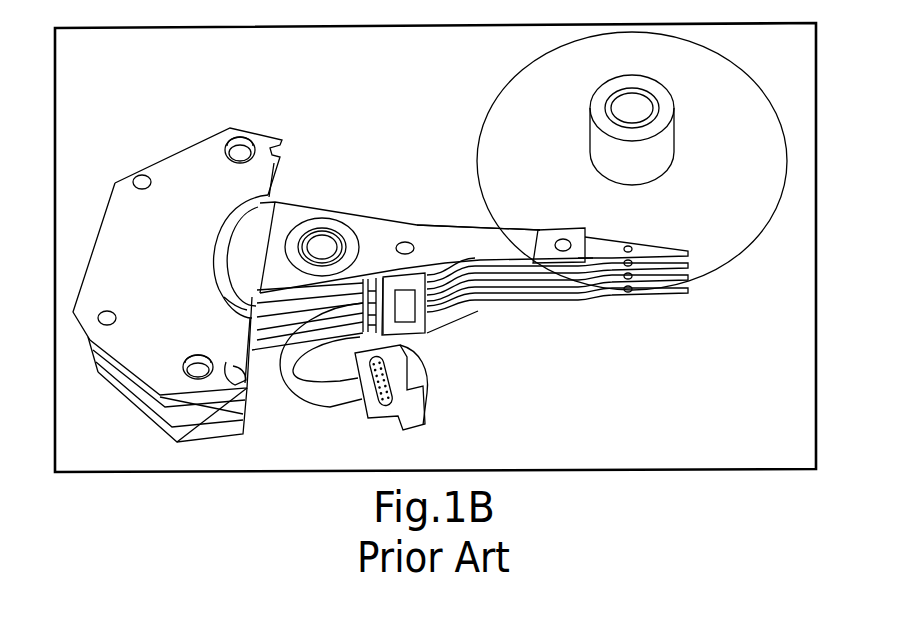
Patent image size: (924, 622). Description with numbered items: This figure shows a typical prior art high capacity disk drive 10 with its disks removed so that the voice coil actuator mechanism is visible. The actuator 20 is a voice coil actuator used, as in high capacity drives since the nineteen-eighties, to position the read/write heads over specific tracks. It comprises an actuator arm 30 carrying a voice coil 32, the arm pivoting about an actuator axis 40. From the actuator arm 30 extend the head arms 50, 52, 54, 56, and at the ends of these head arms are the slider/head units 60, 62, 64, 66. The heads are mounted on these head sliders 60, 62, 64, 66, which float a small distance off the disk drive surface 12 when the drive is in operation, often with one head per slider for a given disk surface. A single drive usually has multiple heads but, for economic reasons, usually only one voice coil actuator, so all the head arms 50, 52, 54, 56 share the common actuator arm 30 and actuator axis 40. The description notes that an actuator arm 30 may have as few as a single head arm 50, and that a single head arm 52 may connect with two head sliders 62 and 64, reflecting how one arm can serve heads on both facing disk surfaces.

The high capacity disk drive 10 is at (327, 77).
The disk drive surface 12 is at (712, 68).
The actuator 20 is at (188, 167).
The actuator arm 30 is at (262, 237).
The voice coil 32 is at (243, 258).
The actuator axis 40 is at (325, 241).
The head arm 50 is at (488, 236).
The head arm 52 is at (545, 297).
The head arm 54 is at (512, 297).
The head arm 56 is at (483, 302).
The slider/head unit 60 is at (665, 252).
The slider/head unit 62 is at (692, 268).
The slider/head unit 64 is at (686, 281).
The slider/head unit 66 is at (652, 290).